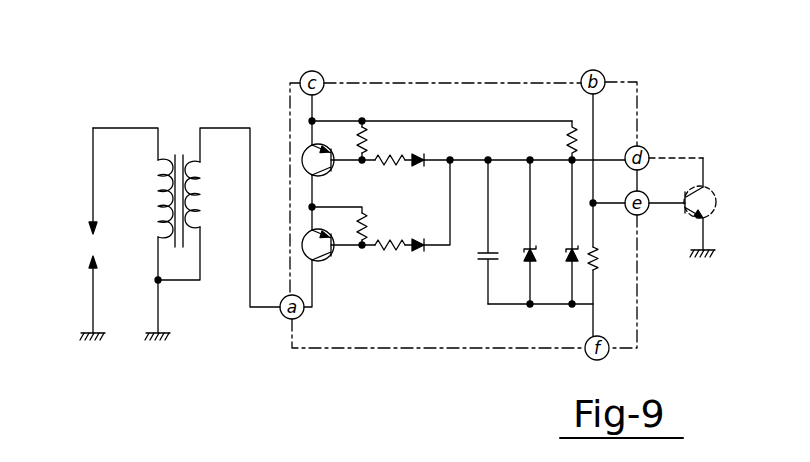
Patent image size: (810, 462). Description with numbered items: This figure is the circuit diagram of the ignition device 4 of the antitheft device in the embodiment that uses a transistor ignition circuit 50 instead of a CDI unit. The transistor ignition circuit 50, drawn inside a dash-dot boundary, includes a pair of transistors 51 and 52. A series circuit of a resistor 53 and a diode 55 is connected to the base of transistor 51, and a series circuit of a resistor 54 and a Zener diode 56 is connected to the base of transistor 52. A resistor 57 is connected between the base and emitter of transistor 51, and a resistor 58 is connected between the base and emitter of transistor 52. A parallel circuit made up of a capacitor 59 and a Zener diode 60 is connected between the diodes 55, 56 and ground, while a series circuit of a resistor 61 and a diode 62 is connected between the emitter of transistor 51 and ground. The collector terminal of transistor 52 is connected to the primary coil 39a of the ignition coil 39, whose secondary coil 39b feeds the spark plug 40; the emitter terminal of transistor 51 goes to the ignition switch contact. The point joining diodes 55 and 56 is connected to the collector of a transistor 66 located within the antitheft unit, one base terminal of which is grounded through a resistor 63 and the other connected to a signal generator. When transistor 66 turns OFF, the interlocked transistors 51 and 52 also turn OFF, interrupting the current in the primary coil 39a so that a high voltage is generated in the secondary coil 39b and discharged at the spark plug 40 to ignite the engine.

The ignition device 4 is at (477, 58).
The ignition coil 39 is at (170, 195).
The primary coil 39a is at (202, 232).
The secondary coil 39b is at (156, 236).
The spark plug 40 is at (88, 238).
The transistor ignition circuit 50 is at (355, 348).
The transistor 51 is at (302, 148).
The transistor 52 is at (322, 262).
The resistor 53 is at (387, 152).
The resistor 54 is at (388, 250).
The diode 55 is at (418, 165).
The Zener diode 56 is at (418, 252).
The resistor 57 is at (366, 135).
The resistor 58 is at (367, 223).
The capacitor 59 is at (488, 262).
The Zener diode 60 is at (528, 262).
The resistor 61 is at (572, 130).
The diode 62 is at (568, 255).
The resistor 63 is at (600, 260).
The transistor 66 is at (712, 210).